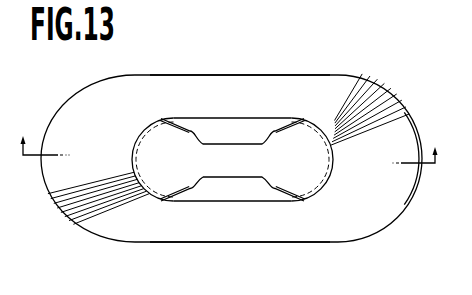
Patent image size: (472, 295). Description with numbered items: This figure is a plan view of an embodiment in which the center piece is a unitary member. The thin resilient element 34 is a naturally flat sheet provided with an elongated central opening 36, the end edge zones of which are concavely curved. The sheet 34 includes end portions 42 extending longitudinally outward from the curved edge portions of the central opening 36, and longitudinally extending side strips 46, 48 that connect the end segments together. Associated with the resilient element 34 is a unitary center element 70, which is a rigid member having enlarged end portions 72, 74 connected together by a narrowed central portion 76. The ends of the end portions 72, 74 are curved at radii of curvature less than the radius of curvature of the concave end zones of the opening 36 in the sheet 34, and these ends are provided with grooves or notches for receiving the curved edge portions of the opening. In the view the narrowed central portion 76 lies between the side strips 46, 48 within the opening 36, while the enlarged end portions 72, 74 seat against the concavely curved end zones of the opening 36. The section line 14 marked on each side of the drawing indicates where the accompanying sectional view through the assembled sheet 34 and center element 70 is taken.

The section line 14- 14 is at (232, 136).
The thin resilient element 34 is at (316, 94).
The elongated central opening 36 is at (250, 131).
The end portion 42 is at (79, 203).
The side strip 46 is at (213, 93).
The side strip 48 is at (230, 220).
The unitary center element 70 is at (178, 175).
The enlarged end portion 72 is at (158, 133).
The enlarged end portion 74 is at (308, 183).
The narrowed central portion 76 is at (248, 170).